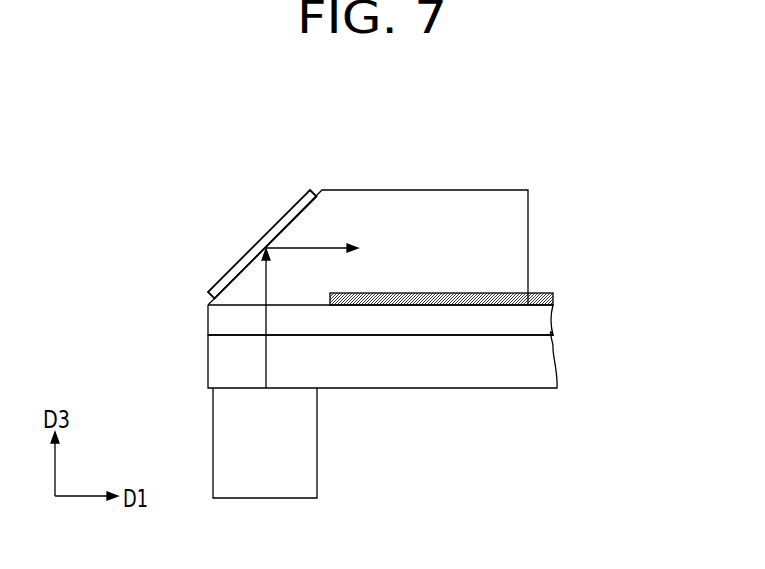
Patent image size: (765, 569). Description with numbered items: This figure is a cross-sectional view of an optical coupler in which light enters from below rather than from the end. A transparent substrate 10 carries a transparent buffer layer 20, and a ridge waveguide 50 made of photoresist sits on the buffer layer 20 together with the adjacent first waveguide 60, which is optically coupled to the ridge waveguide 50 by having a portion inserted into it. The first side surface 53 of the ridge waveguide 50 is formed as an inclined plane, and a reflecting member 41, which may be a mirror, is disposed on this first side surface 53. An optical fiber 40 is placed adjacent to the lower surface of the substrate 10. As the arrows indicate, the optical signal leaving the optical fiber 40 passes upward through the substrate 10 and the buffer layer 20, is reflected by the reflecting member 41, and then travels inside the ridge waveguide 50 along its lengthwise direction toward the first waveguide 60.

The substrate 10 is at (543, 362).
The buffer layer 20 is at (542, 322).
The optical fiber 40 is at (307, 446).
The reflecting member 41 is at (238, 262).
The ridge waveguide 50 is at (515, 245).
The first side surface 53 is at (292, 216).
The first waveguide 60 is at (553, 295).